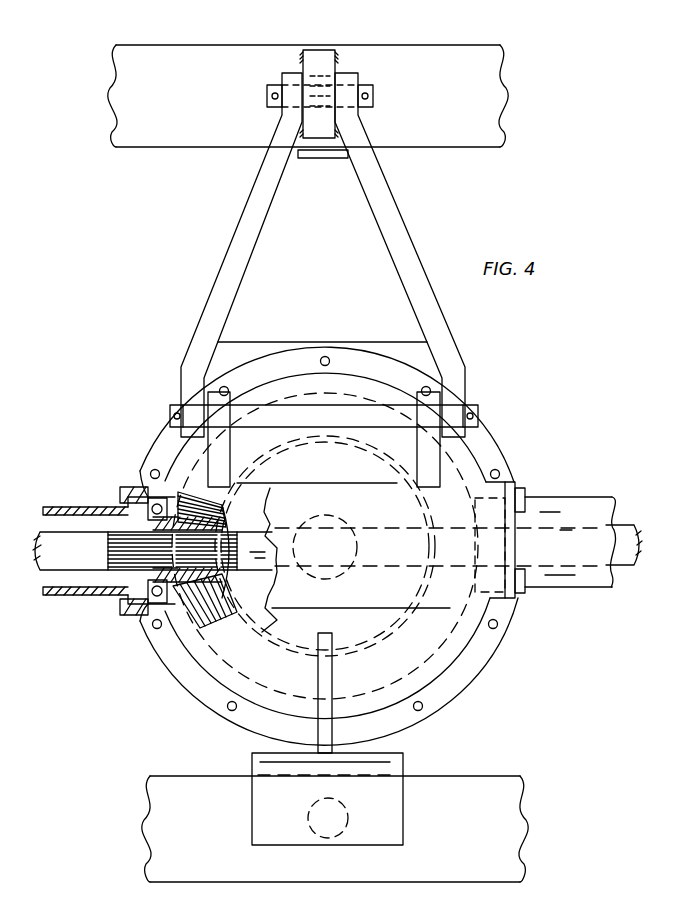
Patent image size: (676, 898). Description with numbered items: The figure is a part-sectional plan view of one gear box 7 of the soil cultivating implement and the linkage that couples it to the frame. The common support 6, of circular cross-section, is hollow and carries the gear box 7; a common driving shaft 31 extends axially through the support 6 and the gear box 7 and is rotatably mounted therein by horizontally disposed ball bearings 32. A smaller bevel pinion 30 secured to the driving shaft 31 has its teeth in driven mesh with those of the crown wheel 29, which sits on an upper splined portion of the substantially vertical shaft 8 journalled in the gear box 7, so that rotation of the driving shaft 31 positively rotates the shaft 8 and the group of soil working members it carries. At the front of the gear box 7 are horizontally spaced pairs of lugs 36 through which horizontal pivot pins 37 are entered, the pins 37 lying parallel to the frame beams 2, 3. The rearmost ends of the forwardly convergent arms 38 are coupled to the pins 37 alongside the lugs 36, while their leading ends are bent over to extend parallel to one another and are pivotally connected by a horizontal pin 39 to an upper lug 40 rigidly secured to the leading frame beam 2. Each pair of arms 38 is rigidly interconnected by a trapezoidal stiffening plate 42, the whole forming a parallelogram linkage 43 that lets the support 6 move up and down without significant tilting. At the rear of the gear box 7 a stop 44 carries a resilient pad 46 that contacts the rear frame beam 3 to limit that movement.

The frame beam 2 is at (118, 80).
The rear frame beam 3 is at (163, 776).
The common support 6 is at (57, 507).
The gear box 7 is at (453, 493).
The shaft 8 is at (336, 520).
The crown wheel 29 is at (173, 622).
The bevel pinion 30 is at (222, 581).
The common driving shaft 31 is at (36, 541).
The ball bearings 32 is at (148, 499).
The lugs 36 is at (248, 408).
The pivot pins 37 is at (478, 413).
The forwardly convergent arms 38 is at (245, 215).
The pin 39 is at (374, 98).
The upper lug 40 is at (322, 55).
The trapezoidal stiffening plate 42 is at (270, 250).
The parallelogram linkage 43 is at (348, 255).
The upper stop 44 is at (262, 806).
The resilient pads 46 is at (318, 836).